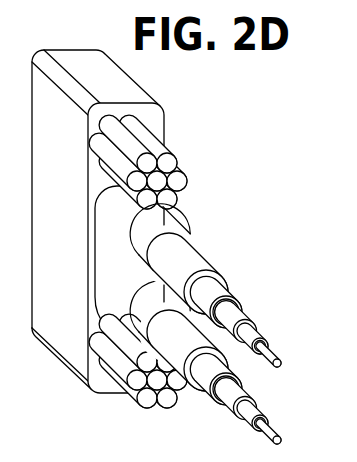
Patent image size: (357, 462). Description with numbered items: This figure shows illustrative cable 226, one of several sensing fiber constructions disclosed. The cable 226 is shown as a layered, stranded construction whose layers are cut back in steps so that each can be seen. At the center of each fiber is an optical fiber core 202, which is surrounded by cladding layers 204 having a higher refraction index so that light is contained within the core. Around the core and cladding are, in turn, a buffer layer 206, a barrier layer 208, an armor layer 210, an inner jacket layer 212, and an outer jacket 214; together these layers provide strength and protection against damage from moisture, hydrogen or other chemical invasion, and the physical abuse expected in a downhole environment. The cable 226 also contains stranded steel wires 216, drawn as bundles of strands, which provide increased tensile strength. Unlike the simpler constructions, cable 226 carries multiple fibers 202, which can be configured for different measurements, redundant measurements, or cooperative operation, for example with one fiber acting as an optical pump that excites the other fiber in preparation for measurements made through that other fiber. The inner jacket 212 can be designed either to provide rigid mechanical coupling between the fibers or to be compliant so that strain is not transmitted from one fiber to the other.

The cable 226 is at (65, 28).
The outer jacket 214 is at (165, 123).
The stranded steel wires 216 is at (176, 161).
The inner jacket layer 212 is at (184, 227).
The armor layer 210 is at (211, 266).
The barrier layer 208 is at (231, 296).
The buffer layer 206 is at (248, 316).
The cladding layers 204 is at (265, 338).
The optical fiber cores 202 is at (276, 356).